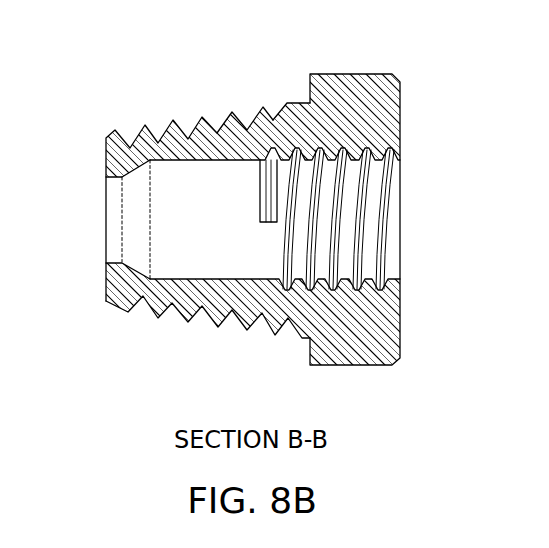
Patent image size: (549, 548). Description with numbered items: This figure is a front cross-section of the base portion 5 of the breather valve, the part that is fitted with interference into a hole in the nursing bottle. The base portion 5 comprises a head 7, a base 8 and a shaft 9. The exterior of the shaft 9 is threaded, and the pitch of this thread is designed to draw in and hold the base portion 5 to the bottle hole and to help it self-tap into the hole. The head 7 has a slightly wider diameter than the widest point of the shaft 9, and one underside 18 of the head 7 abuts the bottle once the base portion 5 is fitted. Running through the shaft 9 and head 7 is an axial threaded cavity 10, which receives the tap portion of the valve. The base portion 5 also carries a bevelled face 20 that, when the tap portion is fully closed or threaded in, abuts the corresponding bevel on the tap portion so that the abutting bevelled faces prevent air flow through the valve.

The base portion 5 is at (413, 64).
The head 7 is at (350, 74).
The base 8 is at (94, 271).
The shaft 9 is at (210, 346).
The axial threaded cavity 10 is at (183, 205).
The underside 18 is at (310, 88).
The bevelled face 20 is at (133, 245).